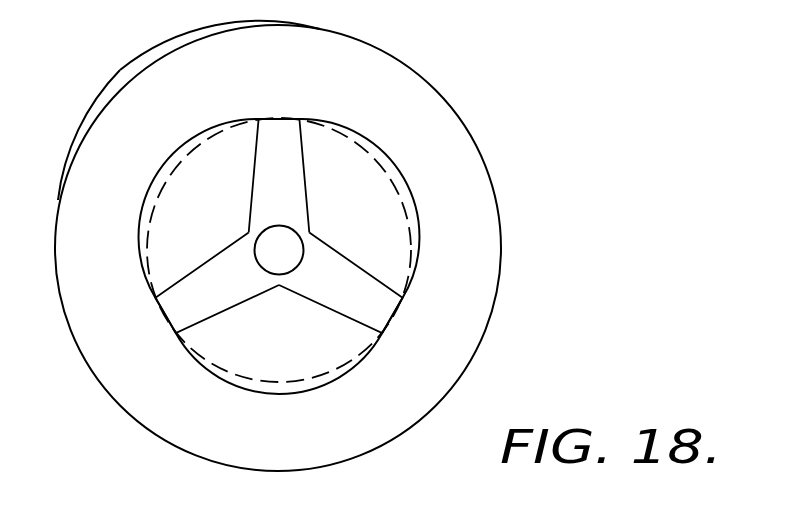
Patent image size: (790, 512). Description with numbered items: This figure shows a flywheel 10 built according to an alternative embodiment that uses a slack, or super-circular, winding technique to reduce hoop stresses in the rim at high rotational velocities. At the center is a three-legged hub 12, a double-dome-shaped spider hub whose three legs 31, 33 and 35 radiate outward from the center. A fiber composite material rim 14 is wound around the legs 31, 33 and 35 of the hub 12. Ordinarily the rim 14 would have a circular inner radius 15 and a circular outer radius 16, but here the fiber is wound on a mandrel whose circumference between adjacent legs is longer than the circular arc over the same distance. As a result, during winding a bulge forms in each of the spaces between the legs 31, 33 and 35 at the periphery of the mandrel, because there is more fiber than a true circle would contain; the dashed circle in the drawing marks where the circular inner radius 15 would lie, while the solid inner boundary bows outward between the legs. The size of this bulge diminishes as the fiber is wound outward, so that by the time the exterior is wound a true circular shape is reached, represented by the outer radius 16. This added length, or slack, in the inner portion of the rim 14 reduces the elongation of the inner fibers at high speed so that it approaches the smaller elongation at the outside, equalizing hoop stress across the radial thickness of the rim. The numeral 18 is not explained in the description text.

The flywheel 10 is at (490, 172).
The three-legged hub 12 is at (287, 208).
The fiber composite material rim 14 is at (140, 81).
The circular inner radius 15 is at (287, 395).
The circular outer radius 16 is at (90, 133).
The circular groove 18 is at (378, 160).
The leg 31 is at (268, 118).
The leg 33 is at (390, 328).
The leg 35 is at (165, 322).